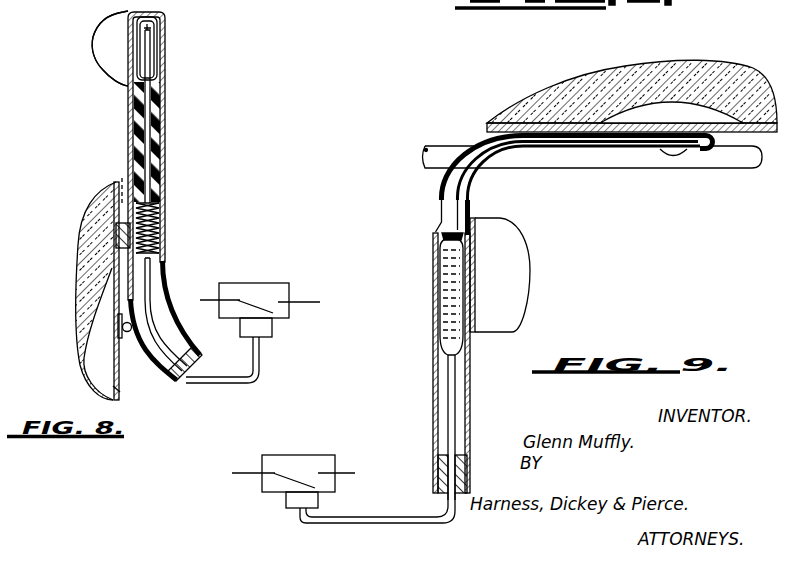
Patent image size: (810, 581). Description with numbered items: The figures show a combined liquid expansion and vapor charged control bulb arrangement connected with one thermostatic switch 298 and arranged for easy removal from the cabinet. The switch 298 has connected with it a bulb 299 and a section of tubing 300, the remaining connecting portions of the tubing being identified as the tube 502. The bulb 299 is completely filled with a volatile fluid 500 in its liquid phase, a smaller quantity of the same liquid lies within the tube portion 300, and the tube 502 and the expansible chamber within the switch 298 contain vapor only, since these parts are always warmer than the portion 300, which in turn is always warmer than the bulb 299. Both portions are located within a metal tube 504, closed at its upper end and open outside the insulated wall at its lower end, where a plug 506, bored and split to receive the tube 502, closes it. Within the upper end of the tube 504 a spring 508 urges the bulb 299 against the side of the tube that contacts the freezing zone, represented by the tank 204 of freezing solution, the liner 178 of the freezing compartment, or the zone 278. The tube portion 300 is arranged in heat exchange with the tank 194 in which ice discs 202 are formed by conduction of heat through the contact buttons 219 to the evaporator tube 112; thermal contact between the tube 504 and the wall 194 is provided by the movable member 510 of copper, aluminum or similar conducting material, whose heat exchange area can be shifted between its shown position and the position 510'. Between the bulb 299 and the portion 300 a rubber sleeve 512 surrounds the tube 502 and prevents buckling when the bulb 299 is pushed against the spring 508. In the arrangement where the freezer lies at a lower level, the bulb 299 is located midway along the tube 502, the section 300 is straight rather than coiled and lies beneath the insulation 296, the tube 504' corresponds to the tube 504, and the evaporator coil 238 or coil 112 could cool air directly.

In FIG. 8, the evaporator coil 112 is at (128, 340).
In FIG. 8, the liner of the freezing compartment 178 is at (80, 49).
In FIG. 8, the tank 194 is at (114, 207).
In FIG. 8, the ice discs 202 is at (100, 333).
In FIG. 9, the ice discs 202 is at (686, 120).
In FIG. 8, the tank of freezing solution 204 is at (128, 30).
In FIG. 8, the contact buttons 219 is at (117, 388).
In FIG. 9, the contact buttons 219 is at (672, 158).
In FIG. 9, the evaporator coil 238 is at (712, 168).
In FIG. 9, the freezing zone 278 is at (522, 307).
In FIG. 9, the insulation block 296 is at (520, 114).
In FIG. 8, the thermostatic switch 298 is at (248, 292).
In FIG. 9, the thermostatic switch 298 is at (292, 455).
In FIG. 8, the bulb 299 is at (148, 30).
In FIG. 9, the bulb 299 is at (438, 237).
In FIG. 8, the section of tubing 300 is at (160, 238).
In FIG. 9, the section of tubing 300 is at (615, 139).
In FIG. 8, the volatile fluid 500 is at (158, 38).
In FIG. 9, the volatile fluid 500 is at (445, 283).
In FIG. 8, the tube 502 is at (166, 167).
In FIG. 9, the tube 502 is at (439, 191).
In FIG. 8, the metal tube 504 is at (202, 320).
In FIG. 9, the tube 504' is at (485, 366).
In FIG. 8, the plug 506 is at (196, 366).
In FIG. 9, the plug 506 is at (472, 491).
In FIG. 8, the spring 508 is at (160, 62).
In FIG. 8, the movable member 510 is at (76, 241).
In FIG. 8, the shifted position of the movable member 510' is at (86, 182).
In FIG. 8, the rubber sleeve 512 is at (158, 137).